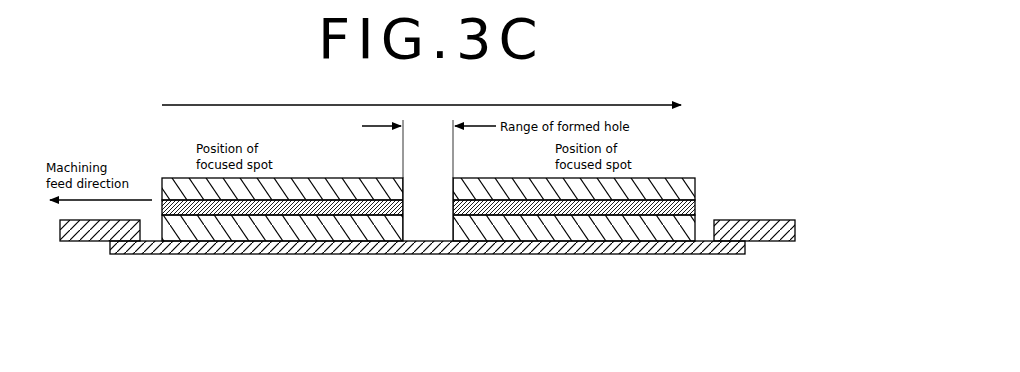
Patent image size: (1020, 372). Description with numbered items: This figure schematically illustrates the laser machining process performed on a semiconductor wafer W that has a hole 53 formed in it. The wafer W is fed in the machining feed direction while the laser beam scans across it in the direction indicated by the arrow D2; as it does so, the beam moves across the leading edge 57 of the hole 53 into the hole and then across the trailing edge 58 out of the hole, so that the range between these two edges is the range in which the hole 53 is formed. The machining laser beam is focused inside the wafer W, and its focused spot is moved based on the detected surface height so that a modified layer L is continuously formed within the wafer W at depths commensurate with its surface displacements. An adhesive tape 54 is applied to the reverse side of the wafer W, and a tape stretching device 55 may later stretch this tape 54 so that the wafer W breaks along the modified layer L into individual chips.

The hole 53 is at (426, 232).
The adhesive tape 54 is at (636, 255).
The tape stretching device 55 is at (740, 220).
The leading edge 57 is at (402, 178).
The trailing edge 58 is at (454, 178).
The semiconductor wafer W is at (694, 176).
The modified layer L is at (285, 215).
The arrow D2 is at (280, 104).